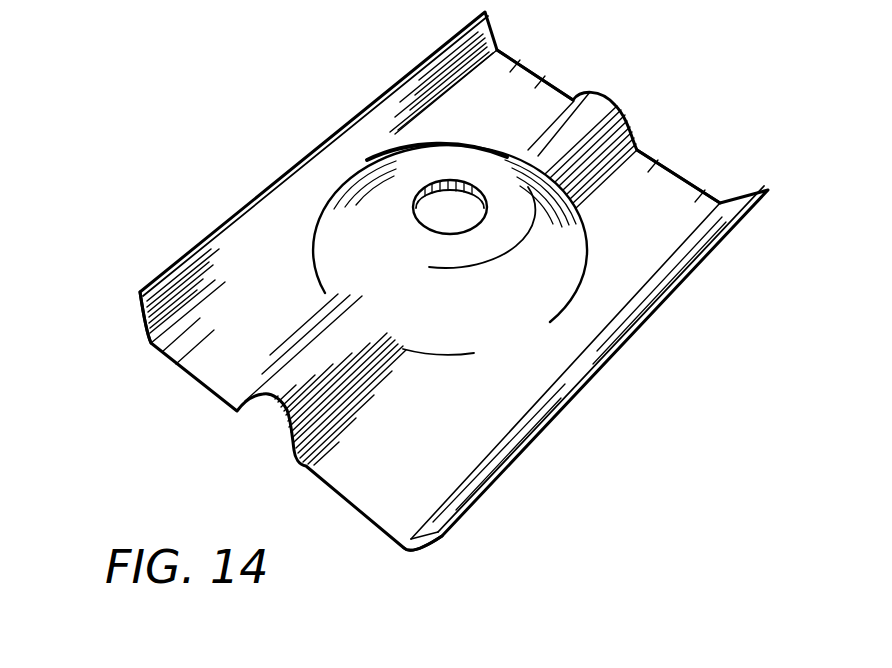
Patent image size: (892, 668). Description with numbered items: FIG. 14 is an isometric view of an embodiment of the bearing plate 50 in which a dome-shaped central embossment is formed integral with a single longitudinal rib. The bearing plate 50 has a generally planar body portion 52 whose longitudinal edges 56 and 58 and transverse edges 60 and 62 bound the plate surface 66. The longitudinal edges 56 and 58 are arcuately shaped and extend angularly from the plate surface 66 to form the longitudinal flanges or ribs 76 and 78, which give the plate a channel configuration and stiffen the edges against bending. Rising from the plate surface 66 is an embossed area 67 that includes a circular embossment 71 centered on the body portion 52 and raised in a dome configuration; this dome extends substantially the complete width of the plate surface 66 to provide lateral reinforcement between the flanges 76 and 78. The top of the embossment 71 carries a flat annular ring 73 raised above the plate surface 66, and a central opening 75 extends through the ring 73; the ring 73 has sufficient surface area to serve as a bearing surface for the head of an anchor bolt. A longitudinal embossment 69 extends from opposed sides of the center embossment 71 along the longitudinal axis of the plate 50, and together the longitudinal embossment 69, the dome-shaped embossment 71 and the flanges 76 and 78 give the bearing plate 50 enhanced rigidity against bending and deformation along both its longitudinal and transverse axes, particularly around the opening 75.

The bearing plate 50 is at (279, 147).
The planar body portion 52 is at (680, 192).
The longitudinal edge 56 is at (370, 107).
The longitudinal edge 58 is at (677, 290).
The transverse edge 60 is at (177, 370).
The transverse edge 62 is at (538, 77).
The plate surface 66 is at (443, 428).
The embossed area 67 is at (297, 269).
The longitudinal embossment 69 is at (608, 108).
The circular embossment 71 is at (555, 223).
The flat annular ring 73 is at (478, 160).
The central opening 75 is at (440, 216).
The longitudinal flange 76 is at (116, 333).
The longitudinal flange 78 is at (440, 556).